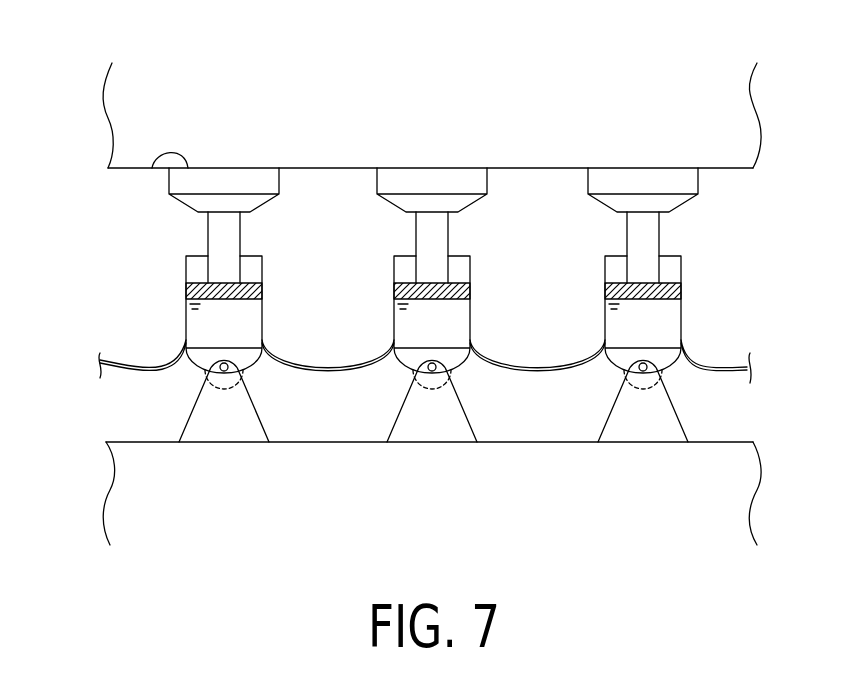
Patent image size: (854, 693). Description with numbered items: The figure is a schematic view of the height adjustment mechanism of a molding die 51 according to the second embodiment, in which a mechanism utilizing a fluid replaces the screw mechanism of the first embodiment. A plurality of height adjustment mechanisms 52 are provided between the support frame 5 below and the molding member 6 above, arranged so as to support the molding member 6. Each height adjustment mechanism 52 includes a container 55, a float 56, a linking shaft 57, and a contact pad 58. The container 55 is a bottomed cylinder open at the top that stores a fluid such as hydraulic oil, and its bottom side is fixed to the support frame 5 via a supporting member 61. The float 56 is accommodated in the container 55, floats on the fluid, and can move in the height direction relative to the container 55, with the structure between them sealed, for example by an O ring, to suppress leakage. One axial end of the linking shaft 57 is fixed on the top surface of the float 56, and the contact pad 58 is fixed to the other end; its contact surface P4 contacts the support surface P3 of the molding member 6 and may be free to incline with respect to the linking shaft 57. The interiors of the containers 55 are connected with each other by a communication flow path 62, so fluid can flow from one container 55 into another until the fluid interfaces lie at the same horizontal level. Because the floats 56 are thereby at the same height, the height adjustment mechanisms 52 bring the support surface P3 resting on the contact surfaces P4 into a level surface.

The support frame 5 is at (102, 520).
The molding member 6 is at (98, 98).
The molding die 51 is at (429, 221).
The height adjustment mechanism 52 is at (683, 290).
The container 55 is at (185, 272).
The float 56 is at (248, 273).
The linking shaft 57 is at (242, 225).
The contact pad 58 is at (280, 180).
The supporting member 61 is at (260, 412).
The communication flow path 62 is at (330, 365).
The support surface P3 is at (117, 172).
The contact surface P4 is at (152, 168).